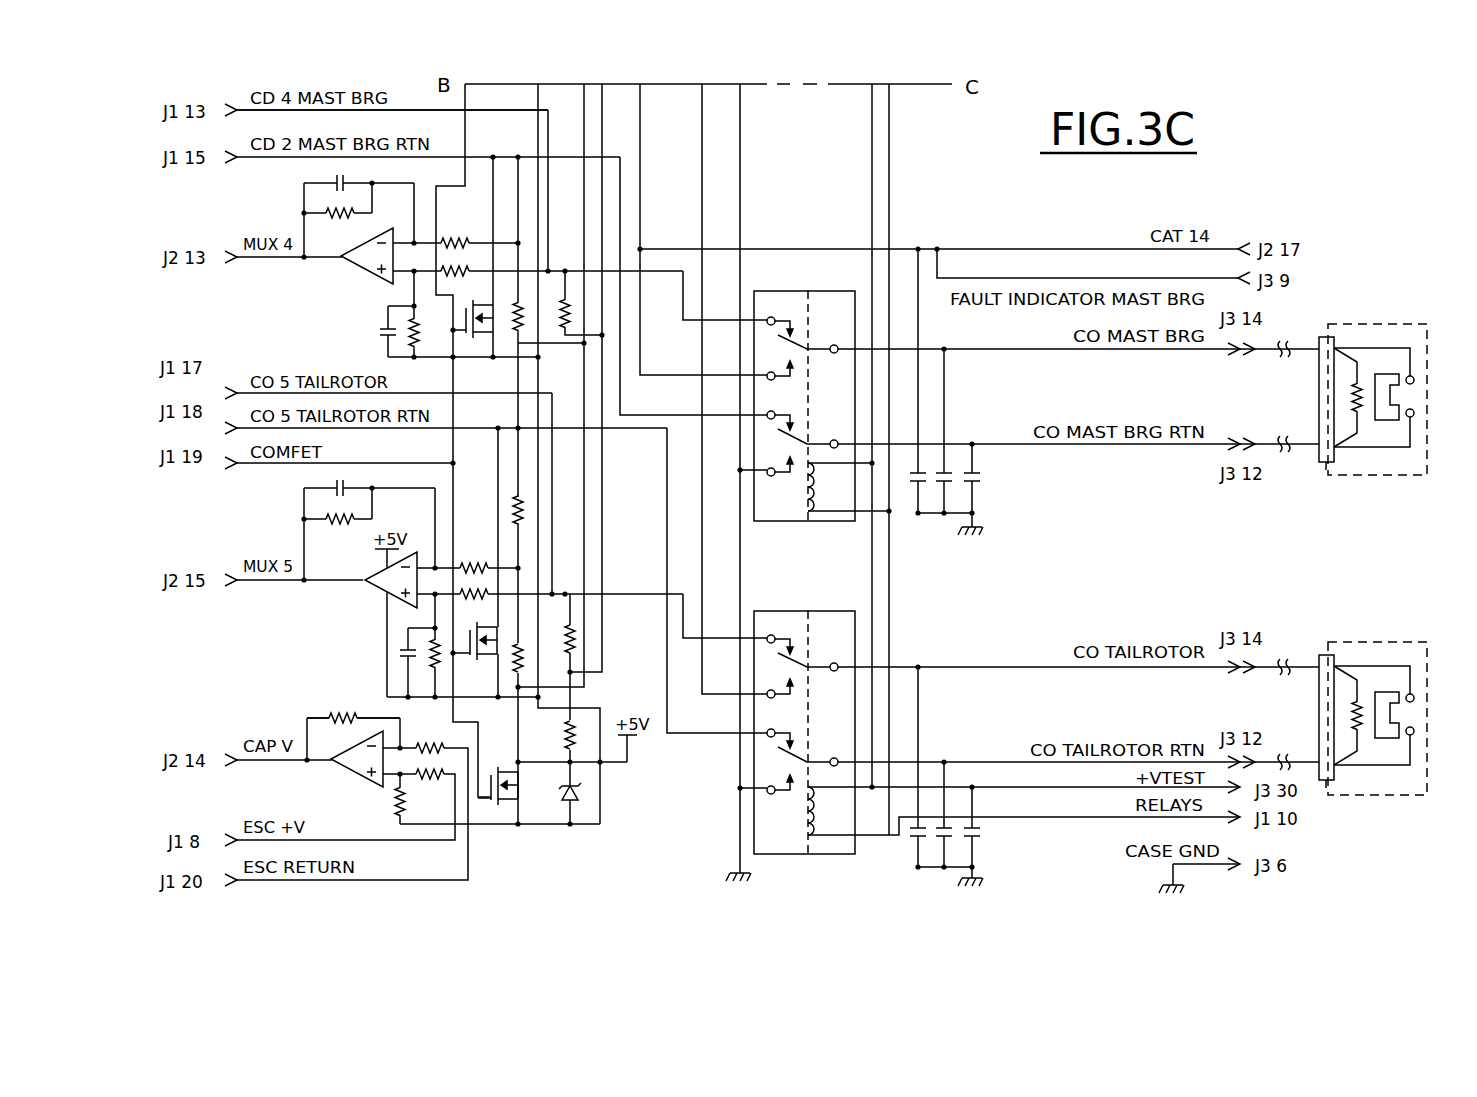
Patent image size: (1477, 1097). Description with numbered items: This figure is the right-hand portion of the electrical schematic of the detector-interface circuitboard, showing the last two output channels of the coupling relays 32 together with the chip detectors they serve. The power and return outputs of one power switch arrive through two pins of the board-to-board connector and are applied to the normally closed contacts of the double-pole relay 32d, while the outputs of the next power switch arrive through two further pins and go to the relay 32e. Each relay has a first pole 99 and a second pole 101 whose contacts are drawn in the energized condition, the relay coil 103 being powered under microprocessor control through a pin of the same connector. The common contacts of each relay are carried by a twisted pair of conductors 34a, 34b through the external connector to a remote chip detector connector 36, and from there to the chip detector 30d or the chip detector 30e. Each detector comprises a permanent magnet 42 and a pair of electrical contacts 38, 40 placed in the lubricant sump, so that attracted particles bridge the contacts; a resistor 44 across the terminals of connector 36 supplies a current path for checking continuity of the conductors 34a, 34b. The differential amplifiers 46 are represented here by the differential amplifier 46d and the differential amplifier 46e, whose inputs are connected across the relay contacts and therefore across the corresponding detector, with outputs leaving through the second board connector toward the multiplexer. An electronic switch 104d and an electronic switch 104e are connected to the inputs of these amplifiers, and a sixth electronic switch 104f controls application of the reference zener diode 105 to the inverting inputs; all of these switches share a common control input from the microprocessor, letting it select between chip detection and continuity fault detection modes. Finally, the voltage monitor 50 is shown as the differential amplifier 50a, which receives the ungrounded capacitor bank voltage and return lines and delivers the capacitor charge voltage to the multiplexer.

The coupling relays 32 is at (879, 84).
The coupling relay 32d is at (817, 525).
The coupling relay 32e is at (832, 610).
The differential amplifiers 46 is at (418, 104).
The differential amplifier 46d is at (358, 269).
The differential amplifier 46e is at (373, 592).
The voltage monitor 50 is at (299, 717).
The differential amplifier 50a is at (352, 775).
The relay pole 99 is at (804, 310).
The relay pole 101 is at (799, 470).
The relay coil 103 is at (813, 497).
The electronic switch 104d is at (466, 340).
The electronic switch 104e is at (482, 657).
The electronic switch 104f is at (492, 803).
The reference zener diode 105 is at (582, 796).
The chip detector 30d is at (1388, 320).
The chip detector 30e is at (1362, 640).
The conductor 34a is at (1296, 346).
The conductor 34b is at (1303, 443).
The chip detector connector 36 is at (1320, 336).
The electrical contact 38 is at (1413, 377).
The electrical contact 40 is at (1414, 415).
The permanent magnet 42 is at (1386, 425).
The resistor 44 is at (1364, 412).